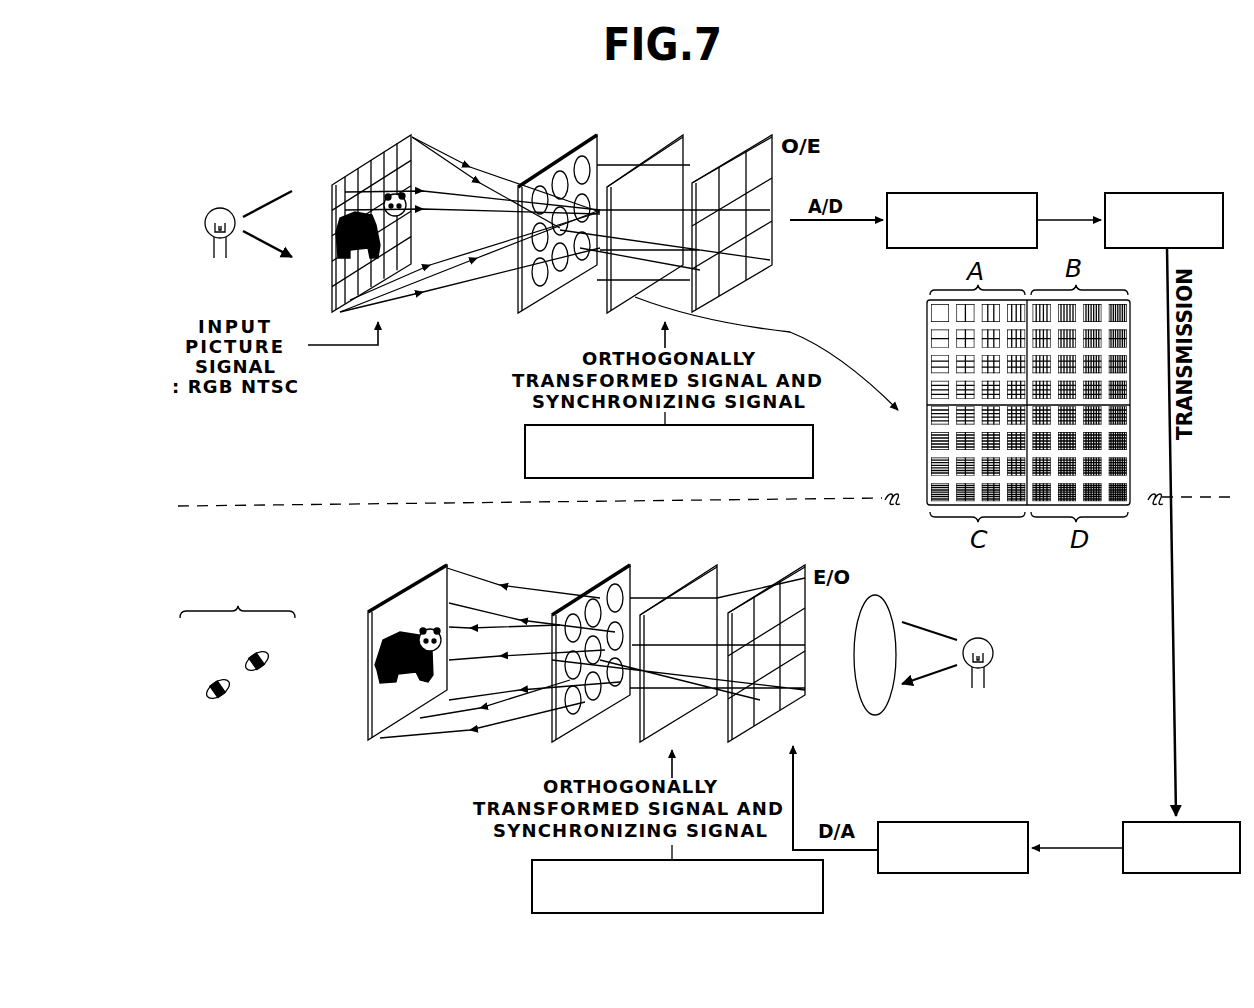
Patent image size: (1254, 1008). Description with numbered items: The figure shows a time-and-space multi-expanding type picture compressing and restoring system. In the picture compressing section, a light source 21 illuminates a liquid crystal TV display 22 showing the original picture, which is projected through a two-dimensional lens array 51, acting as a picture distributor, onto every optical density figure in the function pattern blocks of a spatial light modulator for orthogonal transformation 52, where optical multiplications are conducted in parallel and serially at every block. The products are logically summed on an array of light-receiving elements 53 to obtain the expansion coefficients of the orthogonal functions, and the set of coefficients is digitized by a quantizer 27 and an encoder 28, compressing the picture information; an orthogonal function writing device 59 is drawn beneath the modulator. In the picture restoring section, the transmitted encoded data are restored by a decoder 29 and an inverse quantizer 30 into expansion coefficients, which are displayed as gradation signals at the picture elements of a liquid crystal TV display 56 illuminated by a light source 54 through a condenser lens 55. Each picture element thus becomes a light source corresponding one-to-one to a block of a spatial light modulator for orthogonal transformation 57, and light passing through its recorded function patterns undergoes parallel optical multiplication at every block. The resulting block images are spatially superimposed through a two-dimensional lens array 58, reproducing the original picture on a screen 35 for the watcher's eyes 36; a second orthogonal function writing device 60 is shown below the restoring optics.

The light source 21 is at (214, 208).
The liquid crystal TV display 22 is at (352, 173).
The two-dimensional lens array 51 is at (548, 172).
The spatial light modulator for orthogonal transformation 52 is at (642, 170).
The light-receiving element array 53 is at (730, 170).
The quantizer 27 is at (943, 193).
The encoder 28 is at (1188, 192).
The orthogonal function writing device 59 is at (813, 450).
The watcher's eyes 36 is at (237, 636).
The screen 35 is at (400, 597).
The two-dimensional lens array 58 is at (585, 595).
The spatial light modulator for orthogonal transformation 57 is at (680, 592).
The liquid crystal TV display 56 is at (796, 700).
The condenser lens 55 is at (890, 607).
The light source 54 is at (992, 645).
The inverse quantizer 30 is at (996, 822).
The decoder 29 is at (1213, 822).
The orthogonal function writing device 60 is at (532, 887).